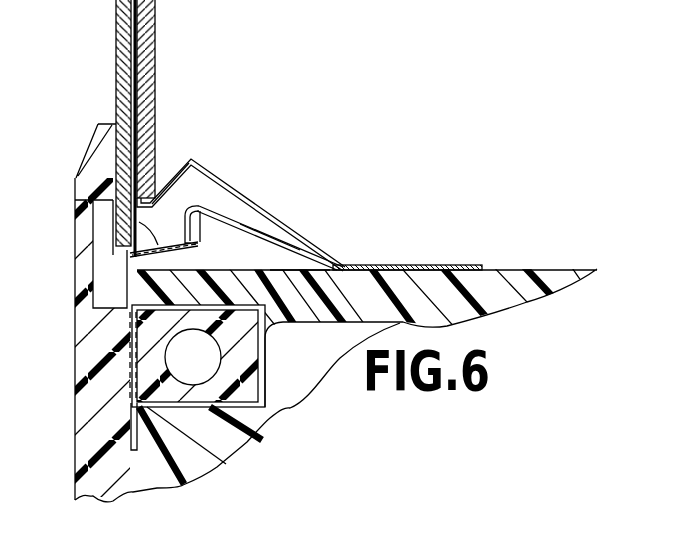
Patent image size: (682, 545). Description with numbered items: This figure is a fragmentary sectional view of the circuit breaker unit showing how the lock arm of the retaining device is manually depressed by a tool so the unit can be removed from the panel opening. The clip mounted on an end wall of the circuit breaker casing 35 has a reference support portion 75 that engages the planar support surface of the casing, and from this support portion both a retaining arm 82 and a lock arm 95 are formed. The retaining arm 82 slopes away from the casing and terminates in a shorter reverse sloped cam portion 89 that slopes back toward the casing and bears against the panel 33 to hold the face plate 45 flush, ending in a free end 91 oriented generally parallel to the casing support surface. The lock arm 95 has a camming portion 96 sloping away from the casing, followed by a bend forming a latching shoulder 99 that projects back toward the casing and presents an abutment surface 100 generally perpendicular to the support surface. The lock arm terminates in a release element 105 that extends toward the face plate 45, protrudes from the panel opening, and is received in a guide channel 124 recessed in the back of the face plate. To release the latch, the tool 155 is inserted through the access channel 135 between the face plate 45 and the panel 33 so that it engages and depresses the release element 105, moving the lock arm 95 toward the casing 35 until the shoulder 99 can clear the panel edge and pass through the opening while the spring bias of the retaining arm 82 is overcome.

The tool 155 is at (116, 33).
The panel 33 is at (155, 56).
The access channel 135 is at (113, 163).
The retaining arm 82 is at (191, 152).
The reverse sloped cam portion 89 is at (175, 179).
The camming portion 96 is at (213, 210).
The lock arm 95 is at (262, 219).
The latching shoulder 99 is at (202, 222).
The abutment surface 100 is at (162, 225).
The reference support portion 75 is at (281, 268).
The circuit breaker casing 35 is at (405, 286).
The free end 91 is at (100, 184).
The release element 105 is at (80, 213).
The face plate 45 is at (74, 243).
The guide channel 124 is at (92, 276).